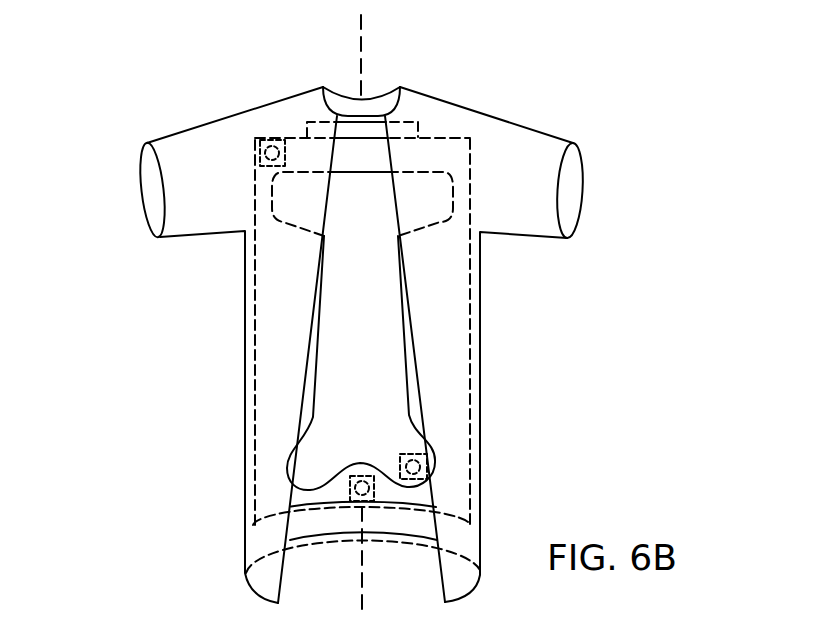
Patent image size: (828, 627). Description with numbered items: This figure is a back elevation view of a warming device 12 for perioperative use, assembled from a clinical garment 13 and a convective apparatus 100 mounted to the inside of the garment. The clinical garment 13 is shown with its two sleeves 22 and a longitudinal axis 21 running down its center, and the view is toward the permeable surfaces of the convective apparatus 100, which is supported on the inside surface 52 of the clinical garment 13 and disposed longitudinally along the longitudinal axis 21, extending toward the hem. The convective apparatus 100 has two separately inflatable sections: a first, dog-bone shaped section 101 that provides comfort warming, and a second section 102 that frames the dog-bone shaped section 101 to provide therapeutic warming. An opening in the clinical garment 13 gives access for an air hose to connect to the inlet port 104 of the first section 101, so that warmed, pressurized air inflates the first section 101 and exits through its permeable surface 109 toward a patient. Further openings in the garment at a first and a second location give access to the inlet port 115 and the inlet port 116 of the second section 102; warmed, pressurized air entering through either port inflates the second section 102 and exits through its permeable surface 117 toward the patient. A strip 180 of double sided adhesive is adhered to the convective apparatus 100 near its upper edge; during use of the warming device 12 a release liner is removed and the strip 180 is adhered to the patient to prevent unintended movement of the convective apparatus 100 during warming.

The warming device 12 is at (184, 355).
The clinical garment 13 is at (245, 391).
The longitudinal axis 21 is at (363, 60).
The sleeves 22 is at (190, 238).
The inside surface 52 is at (325, 520).
The convective apparatus 100 is at (470, 325).
The first section 101 is at (447, 175).
The second section 102 is at (455, 138).
The inlet port 104 is at (420, 453).
The permeable surface 109 is at (380, 362).
The inlet port 115 is at (378, 503).
The inlet port 116 is at (283, 137).
The permeable surface 117 is at (450, 411).
The strip 180 is at (418, 122).